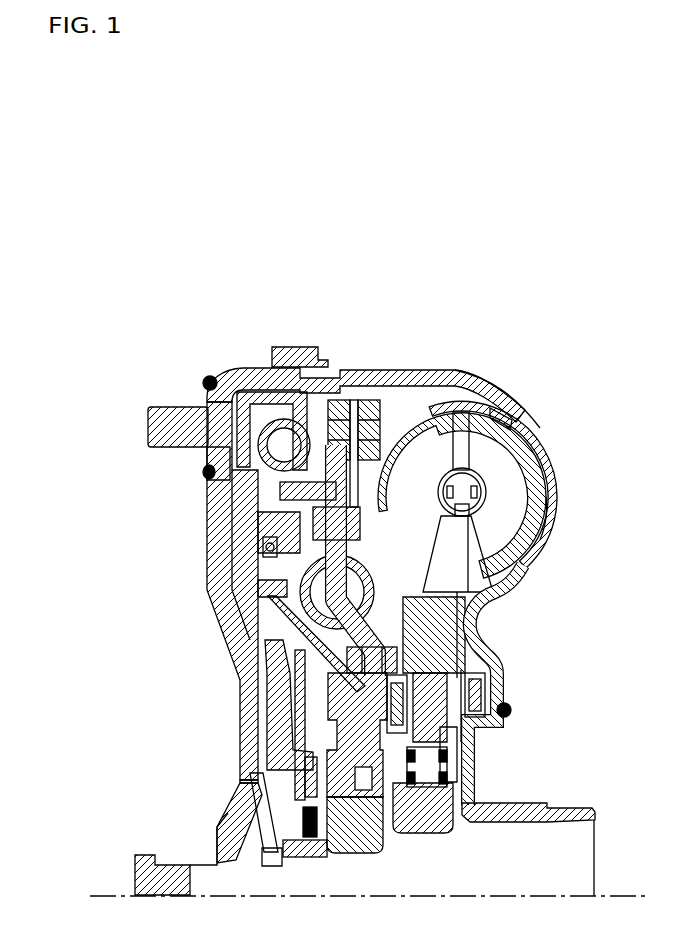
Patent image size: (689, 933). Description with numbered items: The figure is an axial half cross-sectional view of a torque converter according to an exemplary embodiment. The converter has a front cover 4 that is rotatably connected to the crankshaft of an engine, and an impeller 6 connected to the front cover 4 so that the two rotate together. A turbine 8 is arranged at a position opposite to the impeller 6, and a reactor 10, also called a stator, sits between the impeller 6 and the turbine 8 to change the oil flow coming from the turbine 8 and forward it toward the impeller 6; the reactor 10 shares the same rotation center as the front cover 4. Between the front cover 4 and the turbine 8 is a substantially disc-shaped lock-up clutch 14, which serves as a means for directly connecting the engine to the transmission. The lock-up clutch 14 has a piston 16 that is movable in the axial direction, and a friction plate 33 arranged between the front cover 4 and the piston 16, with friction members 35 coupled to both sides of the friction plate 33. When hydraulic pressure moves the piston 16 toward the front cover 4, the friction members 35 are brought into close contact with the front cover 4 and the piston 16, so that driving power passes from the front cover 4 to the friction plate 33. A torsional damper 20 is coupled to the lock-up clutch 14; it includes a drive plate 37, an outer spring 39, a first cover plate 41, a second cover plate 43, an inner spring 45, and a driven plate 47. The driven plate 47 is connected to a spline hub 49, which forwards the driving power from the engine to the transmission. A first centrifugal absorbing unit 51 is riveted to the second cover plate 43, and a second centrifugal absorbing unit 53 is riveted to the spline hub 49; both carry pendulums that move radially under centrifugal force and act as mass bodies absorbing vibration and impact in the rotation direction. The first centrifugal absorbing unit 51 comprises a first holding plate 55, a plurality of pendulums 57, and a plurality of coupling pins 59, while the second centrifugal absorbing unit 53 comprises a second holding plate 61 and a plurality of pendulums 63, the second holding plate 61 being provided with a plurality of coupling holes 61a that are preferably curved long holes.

The front cover 4 is at (245, 718).
The impeller 6 is at (517, 489).
The turbine 8 is at (470, 433).
The reactor 10 is at (452, 544).
The lock-up clutch 14 is at (178, 423).
The piston 16 is at (240, 650).
The torsional damper 20 is at (365, 405).
The friction plate 33 is at (205, 382).
The friction members 35 is at (204, 466).
The drive plate 37 is at (318, 366).
The outer spring 39 is at (218, 440).
The first cover plate 41 is at (258, 388).
The second cover plate 43 is at (338, 402).
The inner spring 45 is at (455, 591).
The driven plate 47 is at (445, 640).
The spline hub 49 is at (445, 767).
The first centrifugal absorbing unit 51 is at (405, 418).
The second centrifugal absorbing unit 53 is at (262, 556).
The first holding plate 55 is at (470, 464).
The pendulums 57 is at (397, 428).
The coupling pins 59 is at (436, 403).
The second holding plate 61 is at (238, 613).
The coupling holes 61a is at (255, 580).
The pendulums 63 is at (250, 520).